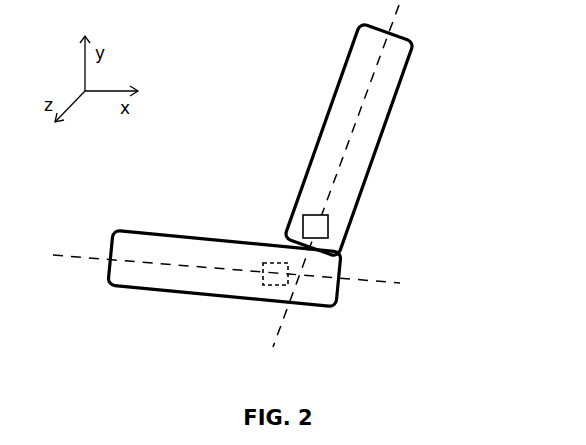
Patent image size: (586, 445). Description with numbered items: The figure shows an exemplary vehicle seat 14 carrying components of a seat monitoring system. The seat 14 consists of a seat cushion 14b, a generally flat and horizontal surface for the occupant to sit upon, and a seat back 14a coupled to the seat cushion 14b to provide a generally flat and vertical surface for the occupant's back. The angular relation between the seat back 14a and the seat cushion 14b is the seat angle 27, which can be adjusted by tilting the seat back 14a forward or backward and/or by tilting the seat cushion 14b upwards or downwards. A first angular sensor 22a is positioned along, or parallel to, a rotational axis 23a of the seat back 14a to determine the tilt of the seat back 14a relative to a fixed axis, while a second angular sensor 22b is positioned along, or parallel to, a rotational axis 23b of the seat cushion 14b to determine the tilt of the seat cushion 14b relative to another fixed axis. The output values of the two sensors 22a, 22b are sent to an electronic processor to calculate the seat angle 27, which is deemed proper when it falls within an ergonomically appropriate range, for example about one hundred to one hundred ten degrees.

The seat 14 is at (304, 146).
The seat back 14a is at (399, 85).
The seat cushion 14b is at (143, 232).
The first angular sensor 22a is at (328, 224).
The second angular sensor 22b is at (272, 285).
The rotational axis of the seat back 23a is at (348, 143).
The rotational axis of the seat cushion 23b is at (182, 267).
The seat angle 27 is at (324, 200).